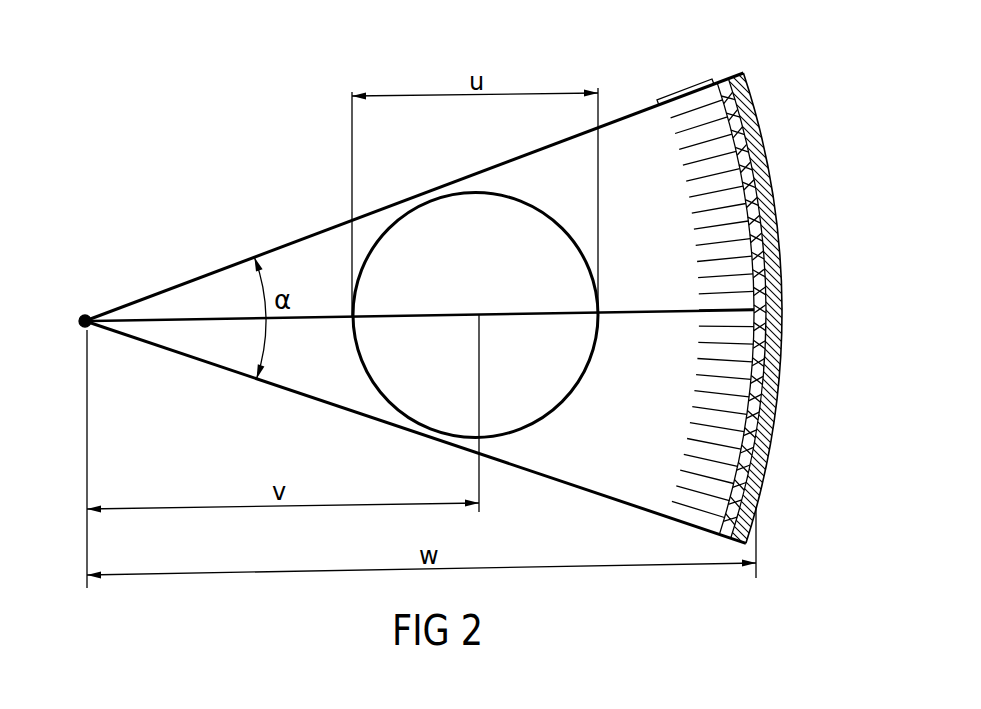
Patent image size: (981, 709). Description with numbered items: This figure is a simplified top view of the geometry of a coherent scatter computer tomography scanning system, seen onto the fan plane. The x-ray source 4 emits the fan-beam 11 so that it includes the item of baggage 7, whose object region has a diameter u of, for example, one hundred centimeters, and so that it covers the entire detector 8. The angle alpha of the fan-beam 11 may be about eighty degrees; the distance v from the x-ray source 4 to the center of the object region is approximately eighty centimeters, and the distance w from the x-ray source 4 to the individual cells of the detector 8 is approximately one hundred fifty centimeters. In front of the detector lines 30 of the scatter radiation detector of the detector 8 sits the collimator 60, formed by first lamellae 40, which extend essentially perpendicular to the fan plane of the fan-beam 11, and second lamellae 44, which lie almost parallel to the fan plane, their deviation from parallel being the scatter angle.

The x-ray source 4 is at (79, 321).
The fan-beam 11 is at (617, 118).
The item of baggage 7 is at (583, 377).
The collimator 60 is at (682, 88).
The first lamellae 40 is at (692, 505).
The second lamellae 44 is at (782, 322).
The detector lines 30 is at (780, 262).
The detector 8 is at (776, 408).